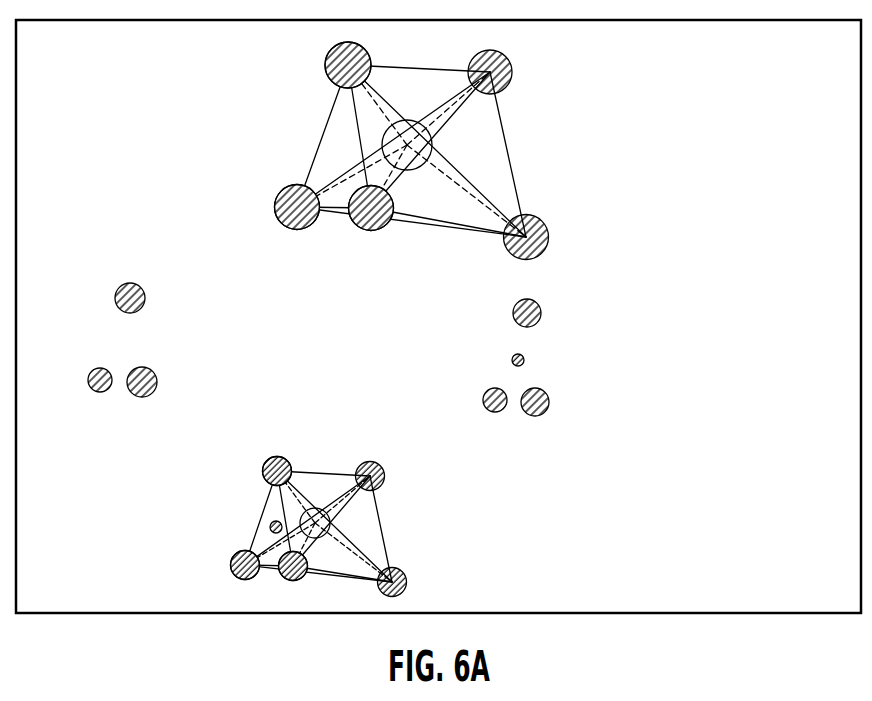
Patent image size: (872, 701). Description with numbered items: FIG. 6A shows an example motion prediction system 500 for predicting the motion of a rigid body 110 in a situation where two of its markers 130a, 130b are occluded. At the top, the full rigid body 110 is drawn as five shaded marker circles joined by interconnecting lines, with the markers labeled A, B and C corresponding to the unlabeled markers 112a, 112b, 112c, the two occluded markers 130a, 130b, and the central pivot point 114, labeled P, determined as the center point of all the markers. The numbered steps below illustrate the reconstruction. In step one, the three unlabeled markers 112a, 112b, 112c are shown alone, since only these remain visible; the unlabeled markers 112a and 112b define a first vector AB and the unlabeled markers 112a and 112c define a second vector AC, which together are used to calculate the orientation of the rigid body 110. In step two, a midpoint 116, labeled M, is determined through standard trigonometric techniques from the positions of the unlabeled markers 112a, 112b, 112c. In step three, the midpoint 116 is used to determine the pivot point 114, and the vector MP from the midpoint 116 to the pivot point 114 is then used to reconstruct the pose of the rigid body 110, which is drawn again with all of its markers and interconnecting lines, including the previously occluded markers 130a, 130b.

The motion prediction system 500 is at (235, 64).
The unlabeled marker 112a is at (329, 78).
The unlabeled marker 112b is at (277, 203).
The unlabeled marker 112c is at (386, 229).
The pivot point 114 is at (430, 140).
The midpoint 116 is at (511, 362).
The marker 130a is at (511, 65).
The marker 130b is at (548, 229).
The rigid body 110 is at (401, 512).